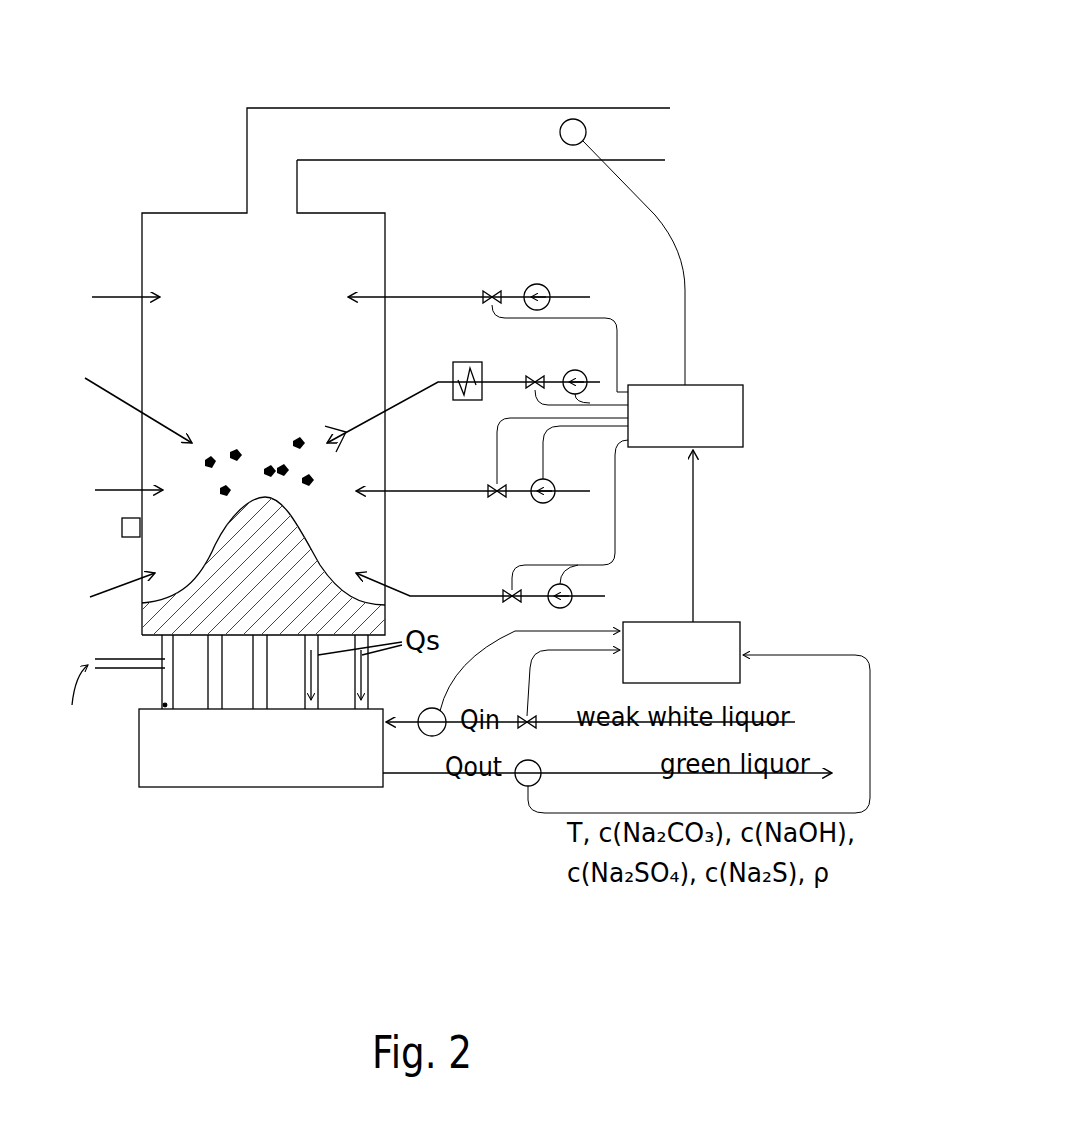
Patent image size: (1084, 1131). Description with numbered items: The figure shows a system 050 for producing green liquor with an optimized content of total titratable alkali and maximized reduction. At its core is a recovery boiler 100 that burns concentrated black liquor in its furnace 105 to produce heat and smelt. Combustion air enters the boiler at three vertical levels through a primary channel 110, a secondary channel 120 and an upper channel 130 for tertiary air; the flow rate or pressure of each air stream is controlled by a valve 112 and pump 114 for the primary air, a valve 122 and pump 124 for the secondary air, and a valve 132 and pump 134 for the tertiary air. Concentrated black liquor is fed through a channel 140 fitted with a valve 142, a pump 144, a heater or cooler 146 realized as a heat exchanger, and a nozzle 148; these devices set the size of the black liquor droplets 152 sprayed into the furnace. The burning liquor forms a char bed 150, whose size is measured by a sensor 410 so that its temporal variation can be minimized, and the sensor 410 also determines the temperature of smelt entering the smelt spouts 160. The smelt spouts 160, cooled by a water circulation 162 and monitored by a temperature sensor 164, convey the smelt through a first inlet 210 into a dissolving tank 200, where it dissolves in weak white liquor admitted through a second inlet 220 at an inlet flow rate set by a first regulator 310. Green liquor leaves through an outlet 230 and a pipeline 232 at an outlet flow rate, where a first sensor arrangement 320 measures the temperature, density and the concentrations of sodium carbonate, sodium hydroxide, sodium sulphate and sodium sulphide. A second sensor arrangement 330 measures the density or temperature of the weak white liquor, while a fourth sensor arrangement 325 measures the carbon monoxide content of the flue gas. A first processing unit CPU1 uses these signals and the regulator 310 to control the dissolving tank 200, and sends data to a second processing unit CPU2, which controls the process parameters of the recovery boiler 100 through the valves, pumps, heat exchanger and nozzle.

The system 050 is at (168, 100).
The recovery boiler 100 is at (192, 213).
The furnace 105 is at (247, 334).
The primary channel 110 is at (145, 592).
The valve 112 is at (508, 592).
The pump 114 is at (566, 586).
The secondary channel 120 is at (160, 488).
The valve 122 is at (492, 487).
The pump 124 is at (563, 477).
The upper channel 130 is at (150, 290).
The valve 132 is at (488, 288).
The pump 134 is at (538, 284).
The channel 140 is at (170, 418).
The valve 142 is at (533, 378).
The pump 144 is at (580, 368).
The heater or cooler 146 is at (462, 368).
The nozzle 148 is at (333, 424).
The char bed 150 is at (304, 565).
The black liquor droplets 152 is at (294, 442).
The smelt spouts 160 is at (150, 657).
The water circulation 162 is at (80, 700).
The temperature sensor 164 is at (170, 712).
The dissolving tank 200 is at (261, 748).
The first inlet 210 is at (162, 704).
The second inlet 220 is at (389, 718).
The outlet 230 is at (390, 784).
The pipeline 232 is at (458, 778).
The first regulator 310 is at (522, 716).
The first sensor arrangement 320 is at (522, 788).
The fourth sensor arrangement 325 is at (577, 119).
The second sensor arrangement 330 is at (441, 708).
The sensor 410 is at (124, 532).
The first processing unit CPU1 is at (681, 566).
The second processing unit CPU2 is at (685, 416).